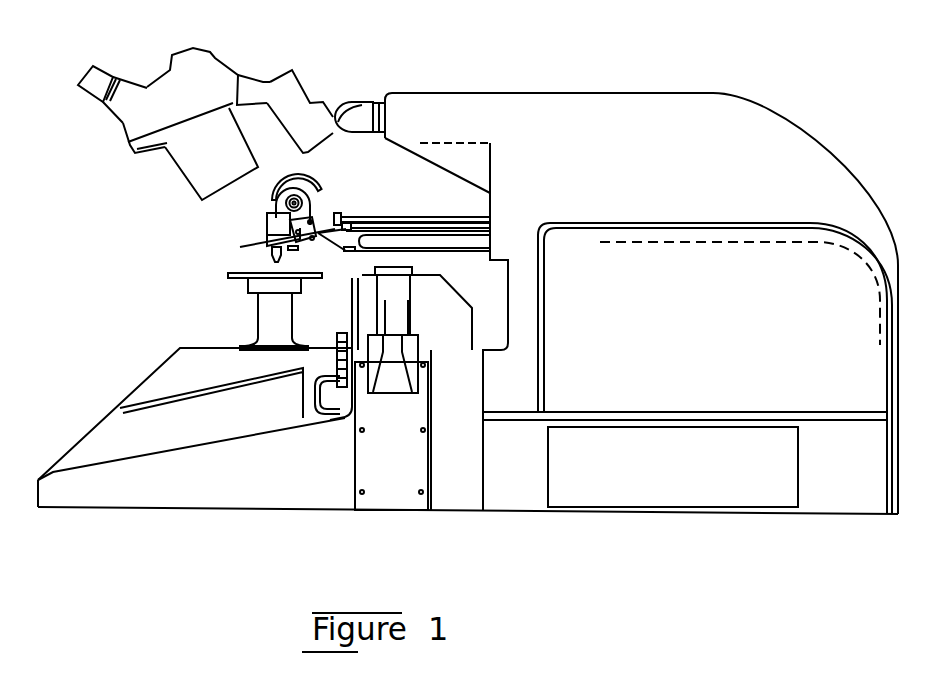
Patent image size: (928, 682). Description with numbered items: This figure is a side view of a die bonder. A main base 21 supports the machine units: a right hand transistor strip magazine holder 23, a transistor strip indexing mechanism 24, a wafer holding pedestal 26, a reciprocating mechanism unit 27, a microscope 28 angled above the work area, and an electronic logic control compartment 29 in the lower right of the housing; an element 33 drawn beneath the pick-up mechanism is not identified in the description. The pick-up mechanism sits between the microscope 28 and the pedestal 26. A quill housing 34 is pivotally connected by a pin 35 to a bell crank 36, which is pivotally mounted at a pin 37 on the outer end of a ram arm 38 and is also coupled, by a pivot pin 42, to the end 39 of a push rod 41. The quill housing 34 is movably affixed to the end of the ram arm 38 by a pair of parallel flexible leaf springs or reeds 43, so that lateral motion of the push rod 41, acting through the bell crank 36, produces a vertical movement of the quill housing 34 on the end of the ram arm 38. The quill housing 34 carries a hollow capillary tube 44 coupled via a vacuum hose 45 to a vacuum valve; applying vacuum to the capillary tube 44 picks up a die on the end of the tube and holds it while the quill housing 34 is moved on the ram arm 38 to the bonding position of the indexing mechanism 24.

The main base 21 is at (303, 498).
The right hand transistor strip magazine holder 23 is at (390, 382).
The transistor strip indexing mechanism 24 is at (445, 345).
The wafer holding pedestal 26 is at (262, 308).
The reciprocating mechanism unit 27 is at (605, 118).
The microscope 28 is at (236, 71).
The electronic logic control compartment 29 is at (787, 478).
The specimen platform 33 is at (228, 275).
The quill housing 34 is at (267, 218).
The pin 35 is at (240, 247).
The bell crank 36 is at (268, 238).
The pin 37 is at (307, 241).
The ram arm 38 is at (449, 242).
The end of push rod 39 is at (341, 216).
The push rod 41 is at (457, 217).
The pivot pin 42 is at (313, 215).
The leaf springs or reeds 43 is at (334, 243).
The hollow capillary tube 44 is at (272, 262).
The vacuum hose 45 is at (303, 170).